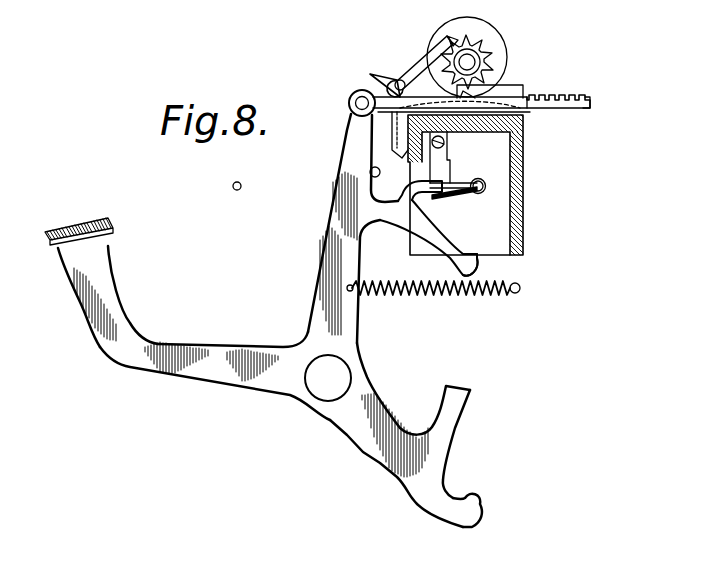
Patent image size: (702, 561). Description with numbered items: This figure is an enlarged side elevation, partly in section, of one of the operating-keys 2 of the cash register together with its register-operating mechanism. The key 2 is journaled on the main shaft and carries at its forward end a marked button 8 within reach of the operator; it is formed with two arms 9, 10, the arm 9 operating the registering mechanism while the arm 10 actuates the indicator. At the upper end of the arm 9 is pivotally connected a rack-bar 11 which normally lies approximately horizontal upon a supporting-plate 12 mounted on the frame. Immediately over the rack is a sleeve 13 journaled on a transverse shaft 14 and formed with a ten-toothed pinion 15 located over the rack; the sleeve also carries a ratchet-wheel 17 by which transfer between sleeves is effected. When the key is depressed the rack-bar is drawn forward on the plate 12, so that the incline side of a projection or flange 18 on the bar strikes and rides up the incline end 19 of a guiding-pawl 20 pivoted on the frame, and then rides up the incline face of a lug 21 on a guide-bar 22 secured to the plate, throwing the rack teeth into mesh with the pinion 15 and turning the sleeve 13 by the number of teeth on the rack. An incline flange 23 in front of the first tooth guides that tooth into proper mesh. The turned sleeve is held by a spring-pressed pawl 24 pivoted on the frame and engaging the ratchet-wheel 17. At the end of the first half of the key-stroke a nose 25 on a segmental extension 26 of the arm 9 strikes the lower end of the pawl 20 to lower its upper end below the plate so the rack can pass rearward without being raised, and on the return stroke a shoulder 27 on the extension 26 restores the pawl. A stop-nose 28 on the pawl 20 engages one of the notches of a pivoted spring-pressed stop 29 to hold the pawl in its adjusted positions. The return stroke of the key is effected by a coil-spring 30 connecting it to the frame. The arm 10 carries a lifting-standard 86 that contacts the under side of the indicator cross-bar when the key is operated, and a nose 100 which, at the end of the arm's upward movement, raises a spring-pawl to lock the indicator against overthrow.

The operating-key 2 is at (228, 348).
The button 8 is at (112, 225).
The arm 9 is at (335, 220).
The arm 10 is at (363, 448).
The rack-bar 11 is at (560, 97).
The supporting-plate 12 is at (523, 130).
The sleeve 13 is at (493, 52).
The transverse shaft 14 is at (483, 62).
The pinion 15 is at (453, 36).
The ratchet-wheel 17 is at (480, 42).
The projection or flange 18 is at (573, 110).
The incline end 19 is at (523, 111).
The guiding-pawl 20 is at (447, 143).
The lug or projection 21 is at (512, 93).
The guide-bar 22 is at (395, 76).
The incline flange 23 is at (530, 100).
The spring-pressed pawl 24 is at (417, 65).
The nose 25 is at (478, 262).
The segmental extension 26 is at (433, 235).
The shoulder 27 is at (400, 199).
The stop-nose 28 is at (448, 182).
The spring-pressed stop 29 is at (462, 193).
The coil-spring 30 is at (433, 298).
The lifting-standard 86 is at (467, 412).
The nose 100 is at (478, 504).